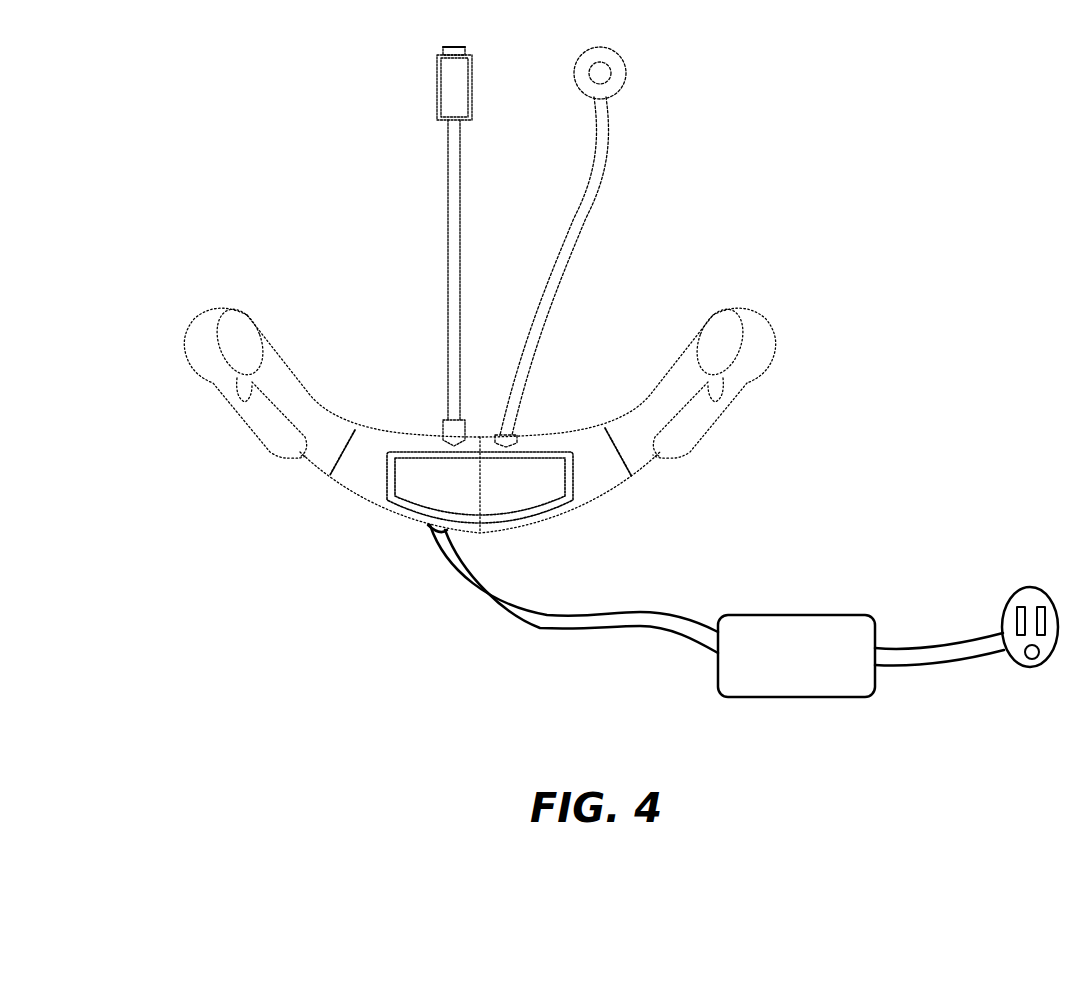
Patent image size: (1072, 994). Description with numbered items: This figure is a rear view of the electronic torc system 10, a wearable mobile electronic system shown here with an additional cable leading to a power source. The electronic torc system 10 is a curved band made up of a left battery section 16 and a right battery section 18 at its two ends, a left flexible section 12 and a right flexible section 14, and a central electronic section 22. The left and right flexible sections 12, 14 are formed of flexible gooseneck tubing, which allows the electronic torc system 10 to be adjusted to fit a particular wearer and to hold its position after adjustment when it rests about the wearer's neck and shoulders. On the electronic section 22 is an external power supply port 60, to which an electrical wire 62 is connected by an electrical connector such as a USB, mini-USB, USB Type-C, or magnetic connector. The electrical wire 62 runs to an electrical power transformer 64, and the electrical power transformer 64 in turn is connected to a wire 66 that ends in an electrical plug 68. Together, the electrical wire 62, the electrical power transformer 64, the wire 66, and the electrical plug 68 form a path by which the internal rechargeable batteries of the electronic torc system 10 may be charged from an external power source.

The electronic torc system 10 is at (183, 308).
The left flexible section 12 is at (322, 450).
The right flexible section 14 is at (765, 327).
The left battery section 16 is at (220, 395).
The right battery section 18 is at (697, 442).
The electronic section 22 is at (520, 490).
The external power supply port 60 is at (420, 531).
The electrical wire 62 is at (490, 593).
The electrical power transformer 64 is at (757, 623).
The wire 66 is at (947, 650).
The electrical plug 68 is at (1025, 588).